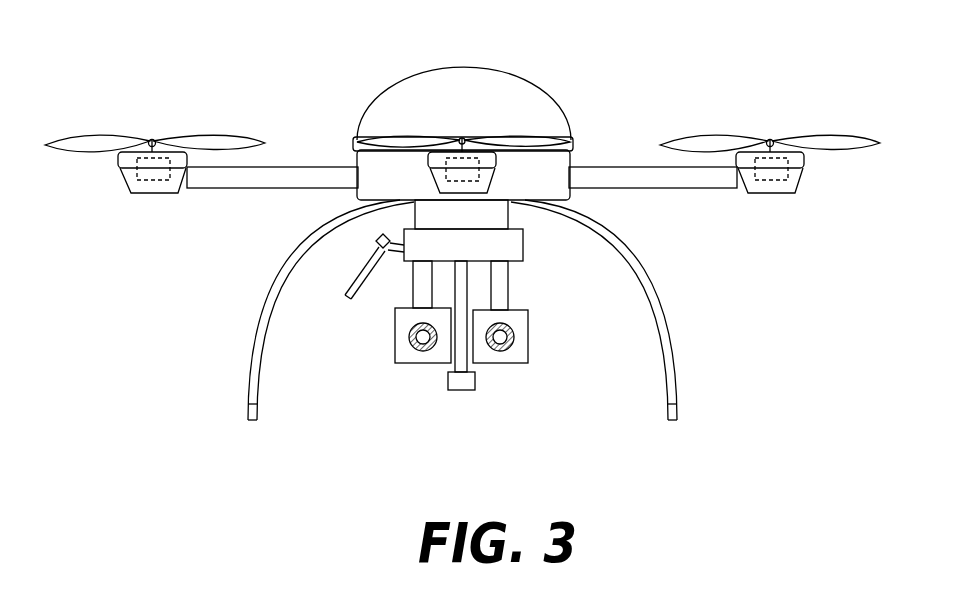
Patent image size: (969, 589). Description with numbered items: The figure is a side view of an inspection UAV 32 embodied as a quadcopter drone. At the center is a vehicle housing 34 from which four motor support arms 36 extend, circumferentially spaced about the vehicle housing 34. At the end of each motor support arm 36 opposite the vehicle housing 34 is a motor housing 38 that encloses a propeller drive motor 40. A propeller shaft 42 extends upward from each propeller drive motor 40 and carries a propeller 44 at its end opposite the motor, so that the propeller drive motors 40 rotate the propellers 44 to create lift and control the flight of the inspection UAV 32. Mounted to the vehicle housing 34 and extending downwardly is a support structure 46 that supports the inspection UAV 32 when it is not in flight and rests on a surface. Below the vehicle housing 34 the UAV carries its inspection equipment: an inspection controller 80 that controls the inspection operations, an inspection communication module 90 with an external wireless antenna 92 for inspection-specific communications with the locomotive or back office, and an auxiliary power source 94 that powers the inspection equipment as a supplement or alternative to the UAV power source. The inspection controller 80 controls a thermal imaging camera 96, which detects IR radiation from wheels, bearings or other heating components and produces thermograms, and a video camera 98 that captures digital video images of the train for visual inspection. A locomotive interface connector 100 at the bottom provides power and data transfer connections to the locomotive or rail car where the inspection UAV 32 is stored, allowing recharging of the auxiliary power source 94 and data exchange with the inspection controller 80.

The inspection UAV 32 is at (244, 55).
The vehicle housing 34 is at (470, 75).
The motor support arm 36 is at (250, 180).
The motor housing 38 is at (124, 176).
The propeller drive motor 40 is at (152, 184).
The propeller shaft 42 is at (153, 150).
The propeller 44 is at (72, 137).
The support structure 46 is at (258, 342).
The inspection controller 80 is at (522, 252).
The inspection communication module 90 is at (460, 316).
The external wireless antenna 92 is at (347, 299).
The auxiliary power source 94 is at (508, 214).
The thermal imaging camera 96 is at (395, 345).
The video camera 98 is at (528, 347).
The locomotive interface connector 100 is at (476, 383).